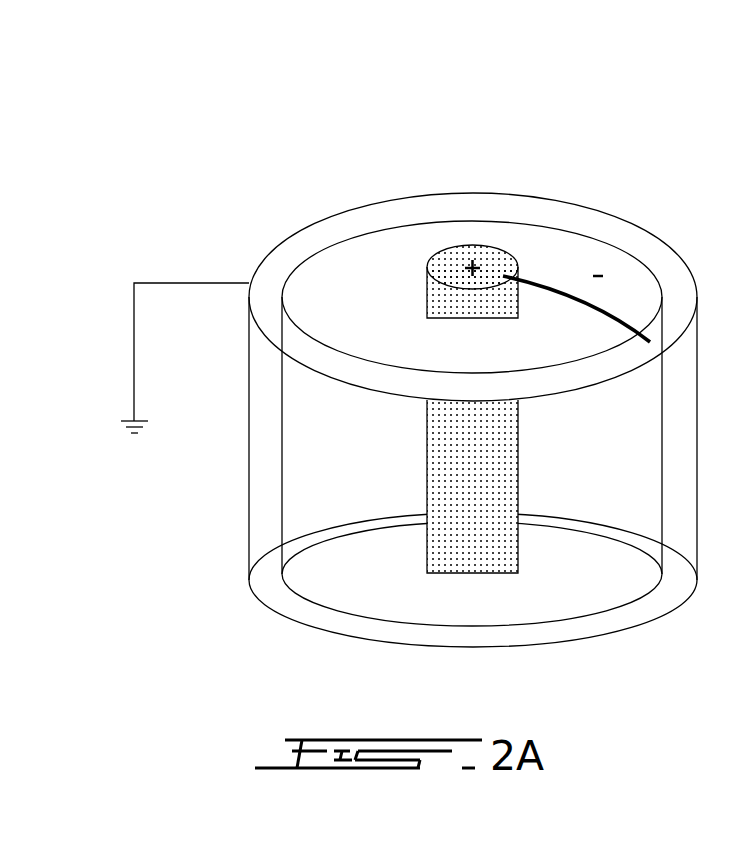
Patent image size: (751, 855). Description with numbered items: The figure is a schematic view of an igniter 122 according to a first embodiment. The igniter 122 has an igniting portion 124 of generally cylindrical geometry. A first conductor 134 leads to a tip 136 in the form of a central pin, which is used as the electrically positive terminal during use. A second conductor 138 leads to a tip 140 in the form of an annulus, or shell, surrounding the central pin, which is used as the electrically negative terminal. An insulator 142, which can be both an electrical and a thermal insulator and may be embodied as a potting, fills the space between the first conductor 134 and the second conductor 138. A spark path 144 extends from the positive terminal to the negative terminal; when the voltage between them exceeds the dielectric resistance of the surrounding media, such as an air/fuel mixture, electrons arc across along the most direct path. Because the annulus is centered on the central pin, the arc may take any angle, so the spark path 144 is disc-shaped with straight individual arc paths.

The igniter 122 is at (404, 372).
The igniting portion 124 is at (419, 406).
The first conductor 134 is at (468, 552).
The tip 136 is at (495, 262).
The second conductor 138 is at (272, 432).
The tip 140 is at (383, 212).
The insulator 142 is at (497, 212).
The spark path 144 is at (630, 308).